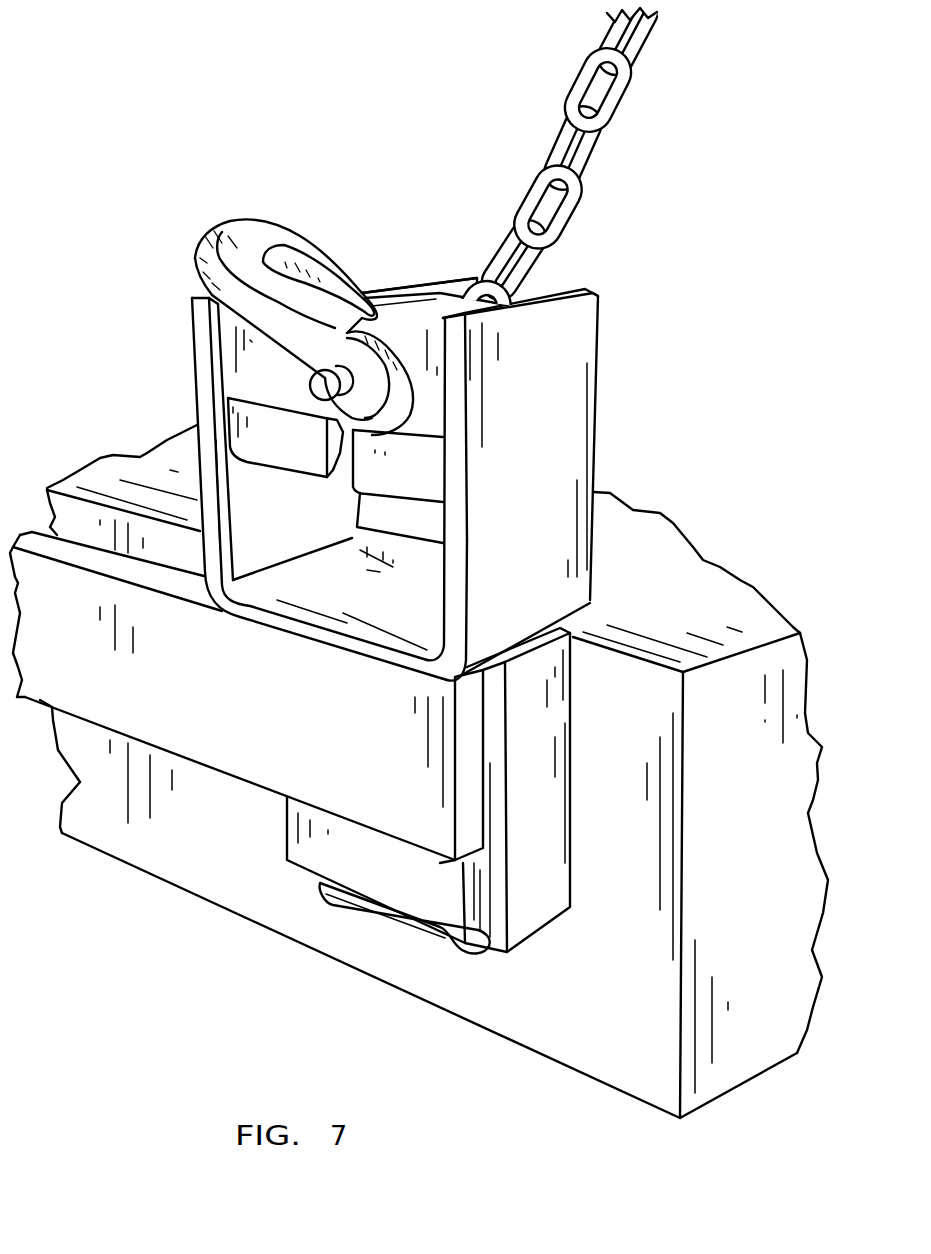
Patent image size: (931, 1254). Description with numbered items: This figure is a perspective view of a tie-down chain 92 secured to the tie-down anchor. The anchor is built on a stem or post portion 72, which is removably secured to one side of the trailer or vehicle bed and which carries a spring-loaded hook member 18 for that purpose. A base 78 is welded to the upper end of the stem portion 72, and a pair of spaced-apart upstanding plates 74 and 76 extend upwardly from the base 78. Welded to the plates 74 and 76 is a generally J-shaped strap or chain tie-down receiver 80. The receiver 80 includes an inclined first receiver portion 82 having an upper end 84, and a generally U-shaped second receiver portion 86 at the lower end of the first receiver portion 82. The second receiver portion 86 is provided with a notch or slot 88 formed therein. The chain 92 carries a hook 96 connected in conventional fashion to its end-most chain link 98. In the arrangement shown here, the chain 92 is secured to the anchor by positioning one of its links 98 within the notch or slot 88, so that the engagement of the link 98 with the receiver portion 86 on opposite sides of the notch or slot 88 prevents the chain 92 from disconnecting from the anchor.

The spring-loaded hook member 18 is at (387, 912).
The stem or post portion 72 is at (553, 743).
The upstanding plate 74 is at (559, 452).
The upstanding plate 76 is at (203, 352).
The base 78 is at (402, 612).
The strap or chain tie-down receiver 80 is at (421, 292).
The first receiver portion 82 is at (413, 337).
The upper end 84 is at (390, 290).
The second receiver portion 86 is at (418, 488).
The notch or slot 88 is at (333, 468).
The chain 92 is at (595, 160).
The hook 96 is at (257, 237).
The chain link 98 is at (400, 402).